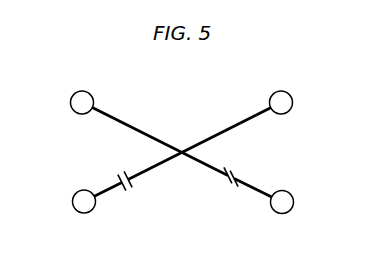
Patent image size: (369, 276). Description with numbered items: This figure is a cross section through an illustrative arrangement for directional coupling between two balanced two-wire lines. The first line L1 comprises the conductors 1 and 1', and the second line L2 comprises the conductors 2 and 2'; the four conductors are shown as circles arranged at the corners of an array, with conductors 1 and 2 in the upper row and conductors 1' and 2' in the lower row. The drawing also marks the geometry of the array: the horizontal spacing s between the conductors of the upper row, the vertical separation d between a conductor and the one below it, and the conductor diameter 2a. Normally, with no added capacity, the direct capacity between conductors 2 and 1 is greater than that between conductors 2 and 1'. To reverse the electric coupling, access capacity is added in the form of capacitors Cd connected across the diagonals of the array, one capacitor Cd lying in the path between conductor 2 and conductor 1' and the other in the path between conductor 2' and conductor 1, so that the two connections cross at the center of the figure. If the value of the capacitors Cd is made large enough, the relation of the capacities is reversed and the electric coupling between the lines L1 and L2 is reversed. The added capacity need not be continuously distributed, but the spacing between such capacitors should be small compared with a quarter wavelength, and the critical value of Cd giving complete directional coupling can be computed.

The conductor 1 is at (281, 102).
The conductor 2 is at (82, 102).
The conductor 1' is at (282, 202).
The conductor 2' is at (84, 201).
The line L1 is at (281, 234).
The line L2 is at (83, 234).
The capacitor Cd is at (181, 162).
The conductor spacing s is at (281, 64).
The conductor separation d is at (322, 102).
The conductor diameter 2a is at (72, 90).